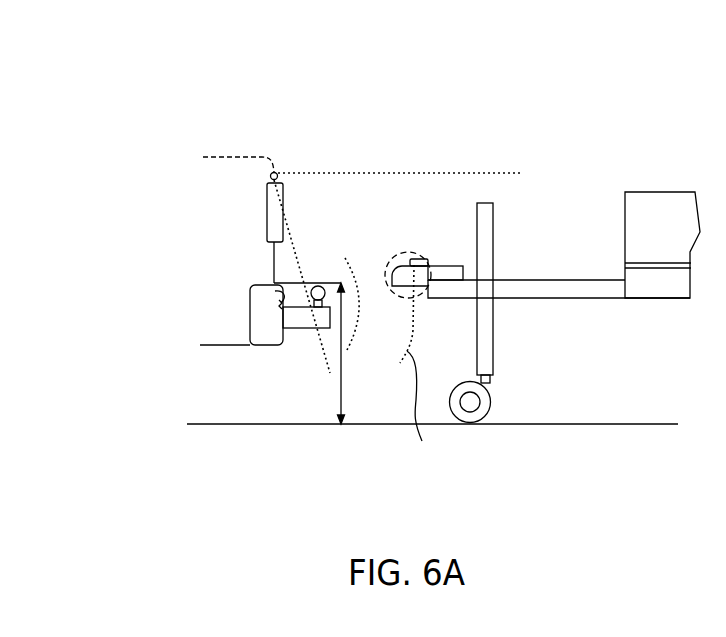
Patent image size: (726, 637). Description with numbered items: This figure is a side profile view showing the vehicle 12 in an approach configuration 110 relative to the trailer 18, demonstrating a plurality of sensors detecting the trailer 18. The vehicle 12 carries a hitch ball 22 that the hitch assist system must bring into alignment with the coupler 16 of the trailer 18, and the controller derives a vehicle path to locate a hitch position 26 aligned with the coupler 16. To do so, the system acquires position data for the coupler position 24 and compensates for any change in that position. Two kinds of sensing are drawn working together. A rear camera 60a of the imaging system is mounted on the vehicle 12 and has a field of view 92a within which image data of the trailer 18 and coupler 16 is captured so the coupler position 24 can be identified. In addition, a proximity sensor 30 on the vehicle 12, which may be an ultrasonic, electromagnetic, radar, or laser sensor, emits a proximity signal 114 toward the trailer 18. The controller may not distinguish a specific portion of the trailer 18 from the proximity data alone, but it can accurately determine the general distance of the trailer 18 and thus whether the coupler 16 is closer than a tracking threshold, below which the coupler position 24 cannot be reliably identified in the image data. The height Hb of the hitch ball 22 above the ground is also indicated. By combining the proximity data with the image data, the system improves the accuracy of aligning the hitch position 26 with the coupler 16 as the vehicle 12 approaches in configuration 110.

The vehicle 12 is at (230, 165).
The rear camera 60a is at (275, 172).
The field of view 92a is at (283, 218).
The proximity sensor 30 is at (275, 291).
The hitch ball 22 is at (312, 293).
The hitch position 26 is at (253, 293).
The hitch ball height Hb is at (341, 380).
The proximity signal 114 is at (352, 338).
The approach configuration 110 is at (526, 239).
The coupler 16 is at (402, 270).
The coupler position 24 is at (395, 251).
The trailer 18 is at (660, 198).